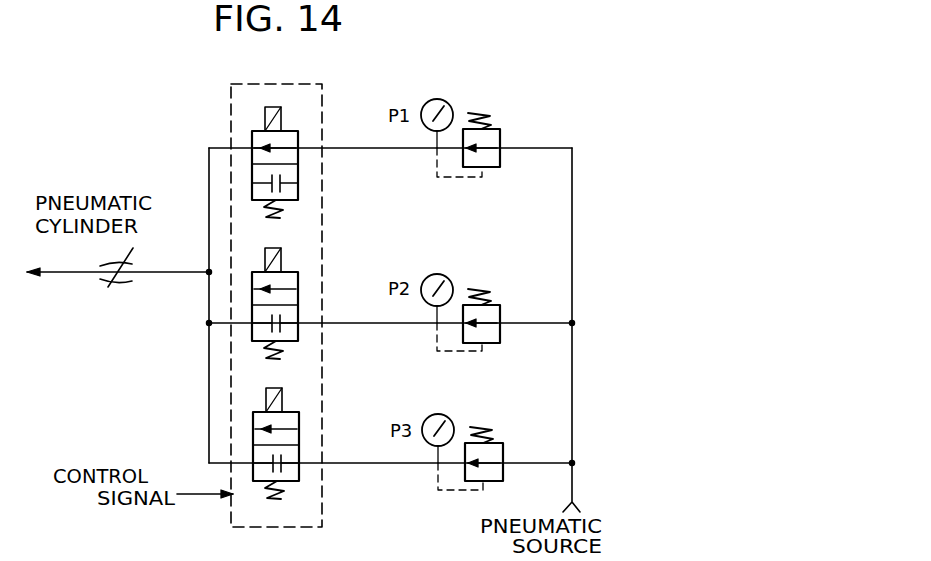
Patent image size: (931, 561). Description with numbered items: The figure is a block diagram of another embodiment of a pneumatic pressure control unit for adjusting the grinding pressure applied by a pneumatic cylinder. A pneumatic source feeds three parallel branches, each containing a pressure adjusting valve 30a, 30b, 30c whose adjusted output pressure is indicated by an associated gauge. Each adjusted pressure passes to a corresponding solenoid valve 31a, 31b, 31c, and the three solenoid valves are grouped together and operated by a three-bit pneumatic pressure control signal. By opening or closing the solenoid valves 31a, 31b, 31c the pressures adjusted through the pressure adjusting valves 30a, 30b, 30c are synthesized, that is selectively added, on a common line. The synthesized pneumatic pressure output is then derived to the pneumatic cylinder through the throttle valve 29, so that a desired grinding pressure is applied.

The throttle valve 29 is at (122, 288).
The solenoid valve 31a is at (298, 132).
The solenoid valve 31b is at (295, 270).
The solenoid valve 31c is at (292, 418).
The pressure adjusting valve 30a is at (493, 138).
The pressure adjusting valve 30b is at (500, 308).
The pressure adjusting valve 30c is at (495, 453).